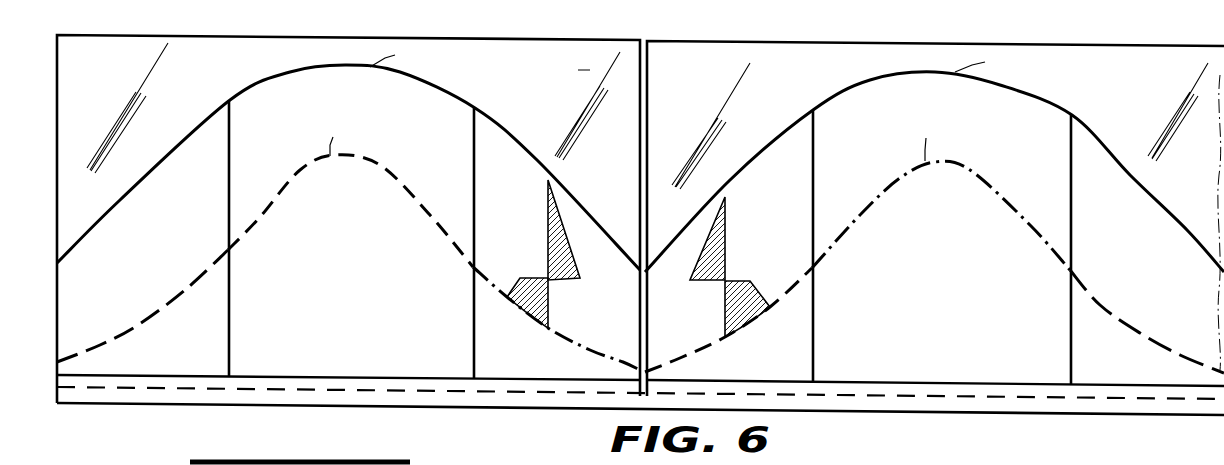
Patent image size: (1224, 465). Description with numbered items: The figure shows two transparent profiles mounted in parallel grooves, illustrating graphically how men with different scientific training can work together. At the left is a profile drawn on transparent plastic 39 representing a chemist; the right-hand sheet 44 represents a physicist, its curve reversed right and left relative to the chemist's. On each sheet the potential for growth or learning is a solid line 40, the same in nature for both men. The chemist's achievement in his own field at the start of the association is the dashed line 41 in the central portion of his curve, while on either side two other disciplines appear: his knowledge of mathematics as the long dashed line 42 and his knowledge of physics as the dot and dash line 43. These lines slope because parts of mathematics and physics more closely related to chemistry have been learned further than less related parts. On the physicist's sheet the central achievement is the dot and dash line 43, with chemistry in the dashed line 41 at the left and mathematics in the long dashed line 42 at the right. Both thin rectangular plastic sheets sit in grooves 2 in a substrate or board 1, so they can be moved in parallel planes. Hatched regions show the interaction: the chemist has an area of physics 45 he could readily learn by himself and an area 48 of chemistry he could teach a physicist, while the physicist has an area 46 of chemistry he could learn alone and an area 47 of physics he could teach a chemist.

The substrate or board 1 is at (1195, 414).
The grooves 2 is at (1163, 400).
The transparent plastic 39 is at (121, 74).
The solid line 40 is at (322, 65).
The dashed line 41 is at (312, 167).
The long dashed line 42 is at (137, 325).
The dot and dash line 43 is at (583, 345).
The second period section 44 is at (1141, 108).
The area of physics 45 is at (528, 280).
The area of chemistry 46 is at (737, 283).
The area of physics 47 is at (725, 228).
The area of chemistry 48 is at (558, 226).